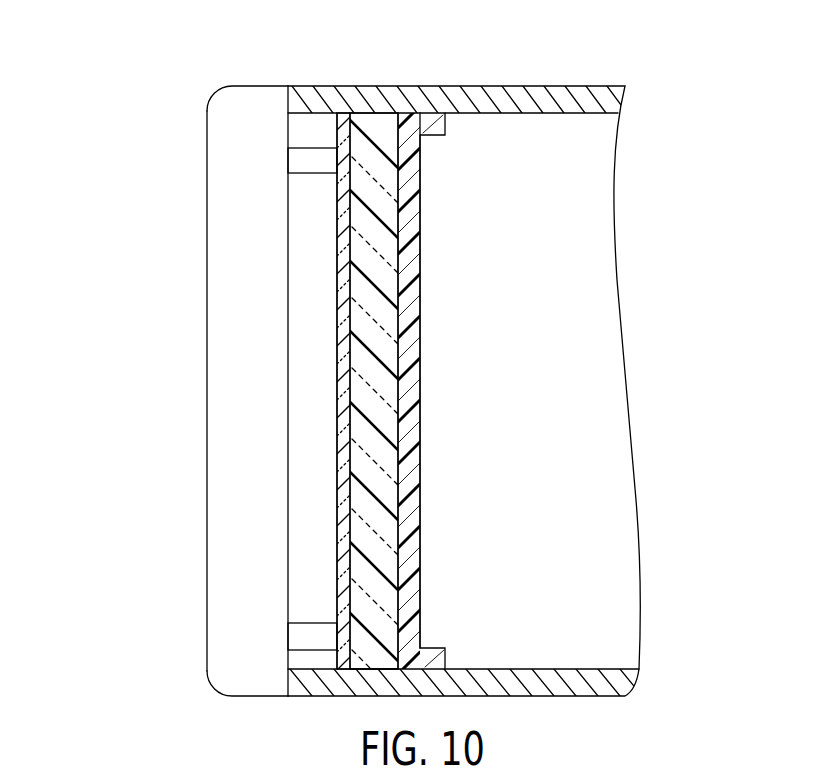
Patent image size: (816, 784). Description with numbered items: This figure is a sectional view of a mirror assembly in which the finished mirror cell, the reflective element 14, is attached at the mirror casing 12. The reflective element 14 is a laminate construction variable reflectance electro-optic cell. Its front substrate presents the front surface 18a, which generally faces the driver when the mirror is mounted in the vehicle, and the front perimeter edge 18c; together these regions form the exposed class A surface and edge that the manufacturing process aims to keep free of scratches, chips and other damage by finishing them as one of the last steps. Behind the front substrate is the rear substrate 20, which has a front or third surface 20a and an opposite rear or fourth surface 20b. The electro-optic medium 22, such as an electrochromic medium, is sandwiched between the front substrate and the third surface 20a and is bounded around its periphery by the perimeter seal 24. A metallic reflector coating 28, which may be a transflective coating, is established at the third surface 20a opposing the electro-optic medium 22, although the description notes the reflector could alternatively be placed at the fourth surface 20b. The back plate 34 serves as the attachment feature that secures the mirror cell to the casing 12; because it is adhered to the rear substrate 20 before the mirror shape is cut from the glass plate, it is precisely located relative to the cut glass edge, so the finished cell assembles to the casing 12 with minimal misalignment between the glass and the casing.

The casing 12 is at (585, 107).
The reflective element 14 is at (171, 497).
The front surface 18a is at (206, 220).
The front perimeter edge 18c is at (213, 98).
The rear substrate 20 is at (383, 123).
The third surface 20a is at (352, 652).
The fourth surface 20b is at (403, 118).
The electro-optic medium 22 is at (303, 593).
The perimeter seal 24 is at (298, 156).
The metallic reflector coating 28 is at (343, 128).
The back plate 34 is at (417, 150).